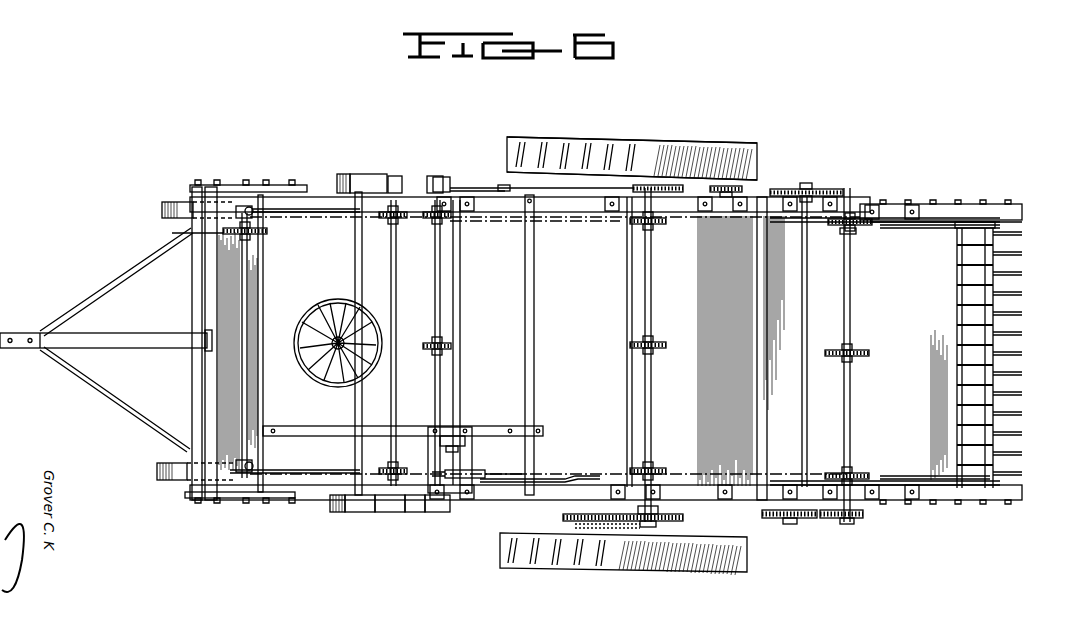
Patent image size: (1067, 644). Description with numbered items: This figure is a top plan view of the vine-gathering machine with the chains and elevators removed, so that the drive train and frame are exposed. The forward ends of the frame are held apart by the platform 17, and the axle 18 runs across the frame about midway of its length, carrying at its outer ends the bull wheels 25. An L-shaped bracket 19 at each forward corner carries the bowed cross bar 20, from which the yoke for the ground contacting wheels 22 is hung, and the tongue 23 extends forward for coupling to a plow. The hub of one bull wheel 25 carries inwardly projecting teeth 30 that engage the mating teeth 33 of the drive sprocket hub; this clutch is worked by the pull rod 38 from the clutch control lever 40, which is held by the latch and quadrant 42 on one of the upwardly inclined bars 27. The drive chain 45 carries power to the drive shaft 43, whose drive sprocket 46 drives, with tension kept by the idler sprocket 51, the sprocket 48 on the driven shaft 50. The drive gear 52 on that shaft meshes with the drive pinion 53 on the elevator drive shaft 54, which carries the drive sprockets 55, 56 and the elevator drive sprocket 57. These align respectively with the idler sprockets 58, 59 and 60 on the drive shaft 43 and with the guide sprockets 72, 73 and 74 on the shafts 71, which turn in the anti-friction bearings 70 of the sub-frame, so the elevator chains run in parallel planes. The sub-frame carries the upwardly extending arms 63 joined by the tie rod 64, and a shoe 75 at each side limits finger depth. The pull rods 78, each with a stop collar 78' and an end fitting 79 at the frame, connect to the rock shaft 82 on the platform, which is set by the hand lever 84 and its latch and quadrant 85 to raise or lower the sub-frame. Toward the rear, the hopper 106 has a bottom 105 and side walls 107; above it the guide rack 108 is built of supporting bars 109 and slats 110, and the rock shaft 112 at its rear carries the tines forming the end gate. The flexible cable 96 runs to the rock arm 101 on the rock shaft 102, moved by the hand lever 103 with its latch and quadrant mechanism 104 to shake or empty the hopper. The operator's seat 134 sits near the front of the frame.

The platform 17 is at (228, 312).
The axle 18 is at (627, 304).
The L-shaped bracket 19 is at (208, 187).
The cross bar 20 is at (198, 396).
The ground contacting wheels 22 is at (162, 210).
The tongue 23 is at (104, 341).
The bull wheels 25 is at (668, 152).
The upwardly inclined bars 27 is at (568, 205).
The inwardly projecting teeth 30 is at (660, 572).
The mating teeth 33 is at (618, 527).
The pull rod 38 is at (552, 478).
The clutch control lever 40 is at (440, 497).
The latch and quadrant 42 is at (470, 472).
The drive shaft 43 is at (650, 415).
The drive chain 45 is at (670, 518).
The drive sprocket 46 is at (650, 185).
The sprocket 48 is at (825, 192).
The driven shaft 50 is at (803, 320).
The idler sprocket 51 is at (735, 190).
The drive gear 52 is at (805, 520).
The drive pinion 53 is at (852, 520).
The elevator drive shaft 54 is at (851, 400).
The drive sprocket 55 is at (855, 472).
The drive sprocket 56 is at (870, 230).
The elevator drive sprocket 57 is at (860, 352).
The idler sprocket 58 is at (656, 468).
The idler sprocket 59 is at (660, 228).
The idler sprocket 60 is at (655, 345).
The upwardly extending arms 63 is at (345, 175).
The tie rod 64 is at (355, 258).
The anti-friction bearings 70 is at (437, 178).
The shafts 71 is at (396, 270).
The guide sprocket 72 is at (386, 466).
The guide sprocket 73 is at (386, 220).
The guide sprocket 74 is at (432, 340).
The shoe 75 is at (372, 176).
The pull rods 78 is at (292, 342).
The stop collar 78' is at (230, 509).
The bearing 79 is at (250, 210).
The rock shaft 82 is at (248, 400).
The hand lever 84 is at (250, 237).
The latch and quadrant 85 is at (185, 234).
The flexible cable 96 is at (515, 192).
The rock arm 101 is at (470, 186).
The rock shaft 102 is at (460, 300).
The hand lever 103 is at (467, 428).
The latch and quadrant mechanism 104 is at (440, 428).
The bottom 105 is at (760, 470).
The hopper 106 is at (848, 230).
The side walls 107 is at (778, 218).
The guide rack 108 is at (966, 211).
The supporting bars 109 is at (892, 207).
The slats 110 is at (942, 222).
The rock shaft 112 is at (993, 320).
The operator's seat 134 is at (325, 305).